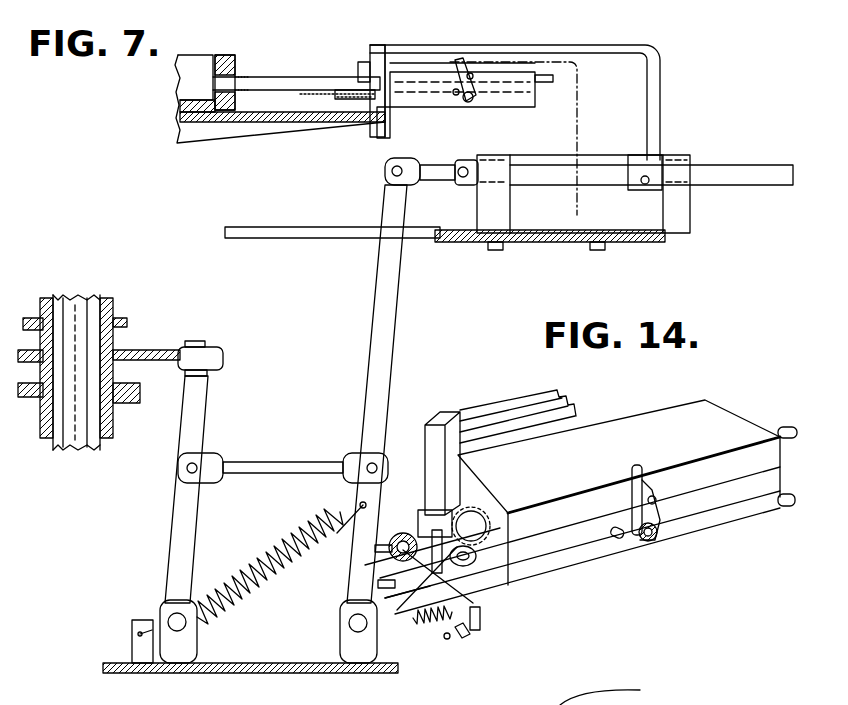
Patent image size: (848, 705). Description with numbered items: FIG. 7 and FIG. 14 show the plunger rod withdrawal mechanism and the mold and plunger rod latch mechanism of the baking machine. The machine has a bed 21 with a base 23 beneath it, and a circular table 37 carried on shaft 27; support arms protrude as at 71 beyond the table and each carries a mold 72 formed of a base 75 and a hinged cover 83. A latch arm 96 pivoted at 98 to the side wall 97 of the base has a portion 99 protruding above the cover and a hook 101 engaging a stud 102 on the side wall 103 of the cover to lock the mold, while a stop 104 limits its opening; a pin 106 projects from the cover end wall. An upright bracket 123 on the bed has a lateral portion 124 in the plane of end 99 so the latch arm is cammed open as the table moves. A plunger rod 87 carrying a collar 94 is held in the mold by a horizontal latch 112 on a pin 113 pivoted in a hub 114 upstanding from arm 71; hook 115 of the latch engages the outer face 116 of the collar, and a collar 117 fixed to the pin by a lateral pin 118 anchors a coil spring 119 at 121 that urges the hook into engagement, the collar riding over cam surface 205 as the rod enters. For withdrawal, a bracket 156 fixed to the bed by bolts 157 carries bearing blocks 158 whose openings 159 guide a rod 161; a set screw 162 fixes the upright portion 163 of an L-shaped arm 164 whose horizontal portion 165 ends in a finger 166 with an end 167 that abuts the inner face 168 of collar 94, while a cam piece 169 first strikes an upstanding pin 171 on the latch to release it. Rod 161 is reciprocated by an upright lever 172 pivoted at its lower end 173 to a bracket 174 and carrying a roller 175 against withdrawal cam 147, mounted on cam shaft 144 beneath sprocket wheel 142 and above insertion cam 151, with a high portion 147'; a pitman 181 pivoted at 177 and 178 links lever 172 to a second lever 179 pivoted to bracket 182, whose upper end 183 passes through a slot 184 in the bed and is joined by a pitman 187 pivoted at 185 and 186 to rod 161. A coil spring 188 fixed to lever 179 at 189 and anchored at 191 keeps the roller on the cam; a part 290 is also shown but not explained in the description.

In FIG. 7, the bed 21 is at (455, 243).
In FIG. 7, the base 23 is at (250, 670).
In FIG. 7, the shaft 27 is at (76, 300).
In FIG. 7, the circular table 37 is at (200, 130).
In FIG. 14, the protruding end of support arm 71 is at (500, 593).
In FIG. 14, the mold 72 is at (650, 408).
In FIG. 14, the base 75 is at (745, 506).
In FIG. 14, the cover 83 is at (748, 440).
In FIG. 7, the plunger rod 87 is at (268, 78).
In FIG. 14, the plunger rod 87 is at (376, 550).
In FIG. 7, the collar 94 is at (340, 100).
In FIG. 14, the collar 94 is at (380, 584).
In FIG. 7, the latch arm 96 is at (450, 85).
In FIG. 14, the latch arm 96 is at (621, 488).
In FIG. 14, the side wall 97 is at (695, 513).
In FIG. 7, the pivot 98 is at (474, 101).
In FIG. 14, the pivot 98 is at (648, 542).
In FIG. 7, the protruding portion 99 is at (456, 72).
In FIG. 14, the protruding portion 99 is at (636, 465).
In FIG. 7, the hook 101 is at (470, 72).
In FIG. 14, the hook 101 is at (652, 485).
In FIG. 7, the stud 102 is at (460, 90).
In FIG. 14, the stud 102 is at (656, 500).
In FIG. 14, the side wall 103 is at (716, 462).
In FIG. 14, the stop 104 is at (616, 540).
In FIG. 7, the pin 106 is at (541, 83).
In FIG. 14, the pin 106 is at (785, 426).
In FIG. 7, the latch 112 is at (345, 96).
In FIG. 14, the latch 112 is at (472, 580).
In FIG. 14, the pin 113 is at (533, 527).
In FIG. 14, the hub 114 is at (532, 562).
In FIG. 14, the hook 115 is at (410, 618).
In FIG. 14, the outer face 116 is at (404, 532).
In FIG. 14, the collar 117 is at (475, 628).
In FIG. 14, the laterally extending pin 118 is at (448, 640).
In FIG. 14, the coil spring 119 is at (428, 628).
In FIG. 14, the spring attachment point 121 is at (468, 637).
In FIG. 7, the upright bracket 123 is at (588, 91).
In FIG. 7, the laterally extending portion 124 is at (490, 65).
In FIG. 7, the sprocket wheel 142 is at (115, 330).
In FIG. 7, the cam shaft 144 is at (48, 442).
In FIG. 7, the plunger rod withdrawal cam 147 is at (149, 329).
In FIG. 7, the high portion 147' is at (208, 332).
In FIG. 7, the plunger rod insertion cam 151 is at (134, 400).
In FIG. 7, the bracket 156 is at (645, 245).
In FIG. 7, the bolts 157 is at (492, 252).
In FIG. 7, the bearing block 158 is at (498, 204).
In FIG. 7, the bearing openings 159 is at (692, 165).
In FIG. 7, the rod 161 is at (600, 172).
In FIG. 7, the set screw 162 is at (643, 185).
In FIG. 7, the upright portion 163 is at (662, 88).
In FIG. 7, the L-shaped arm 164 is at (670, 58).
In FIG. 7, the horizontal portion 165 is at (549, 53).
In FIG. 14, the horizontal portion 165 is at (505, 415).
In FIG. 7, the finger 166 is at (378, 75).
In FIG. 14, the finger 166 is at (437, 420).
In FIG. 7, the end 167 is at (385, 105).
In FIG. 14, the inner face 168 is at (425, 506).
In FIG. 14, the cam piece 169 is at (462, 500).
In FIG. 7, the upstanding pin 171 is at (360, 70).
In FIG. 14, the upstanding pin 171 is at (480, 515).
In FIG. 7, the upright lever 172 is at (172, 520).
In FIG. 7, the lower end 173 is at (168, 573).
In FIG. 7, the bracket 174 is at (195, 634).
In FIG. 7, the roller 175 is at (223, 358).
In FIG. 7, the pivot 177 is at (180, 468).
In FIG. 7, the pivot 178 is at (354, 455).
In FIG. 7, the upright lever 179 is at (372, 357).
In FIG. 7, the pitman 181 is at (258, 462).
In FIG. 7, the bracket 182 is at (340, 645).
In FIG. 7, the upper end 183 is at (378, 204).
In FIG. 7, the slot 184 is at (332, 240).
In FIG. 7, the pivot 185 is at (386, 171).
In FIG. 7, the pivot 186 is at (465, 158).
In FIG. 7, the pitman 187 is at (430, 162).
In FIG. 7, the coil spring 188 is at (295, 532).
In FIG. 7, the spring attachment point 189 is at (352, 501).
In FIG. 7, the anchor 191 is at (132, 633).
In FIG. 14, the cam surface 205 is at (385, 601).
In FIG. 14, the guide 290 is at (616, 697).